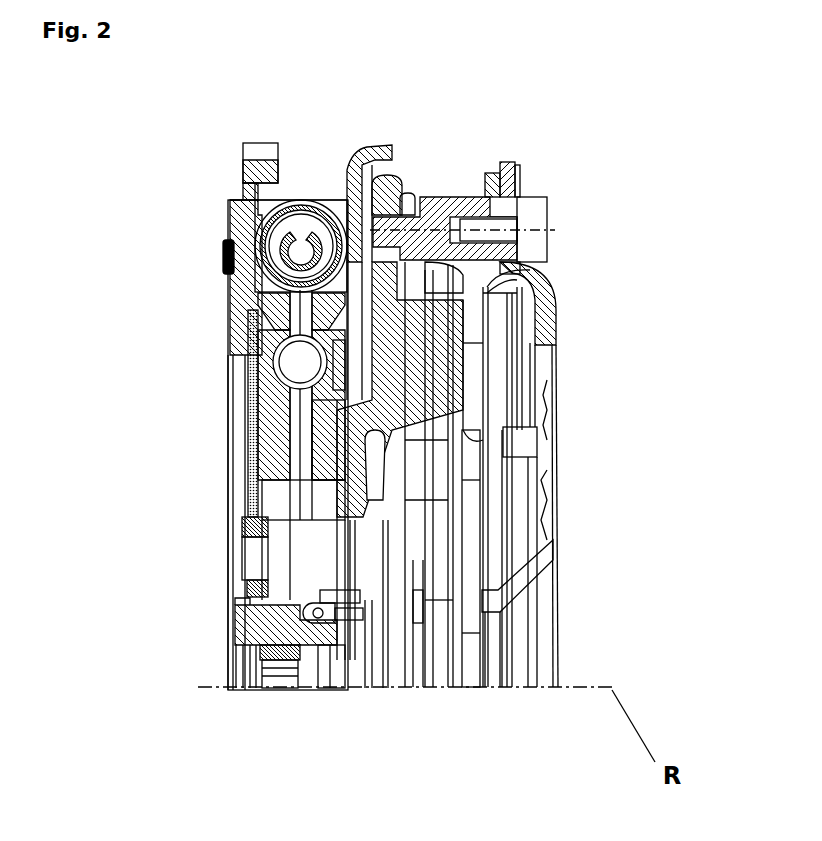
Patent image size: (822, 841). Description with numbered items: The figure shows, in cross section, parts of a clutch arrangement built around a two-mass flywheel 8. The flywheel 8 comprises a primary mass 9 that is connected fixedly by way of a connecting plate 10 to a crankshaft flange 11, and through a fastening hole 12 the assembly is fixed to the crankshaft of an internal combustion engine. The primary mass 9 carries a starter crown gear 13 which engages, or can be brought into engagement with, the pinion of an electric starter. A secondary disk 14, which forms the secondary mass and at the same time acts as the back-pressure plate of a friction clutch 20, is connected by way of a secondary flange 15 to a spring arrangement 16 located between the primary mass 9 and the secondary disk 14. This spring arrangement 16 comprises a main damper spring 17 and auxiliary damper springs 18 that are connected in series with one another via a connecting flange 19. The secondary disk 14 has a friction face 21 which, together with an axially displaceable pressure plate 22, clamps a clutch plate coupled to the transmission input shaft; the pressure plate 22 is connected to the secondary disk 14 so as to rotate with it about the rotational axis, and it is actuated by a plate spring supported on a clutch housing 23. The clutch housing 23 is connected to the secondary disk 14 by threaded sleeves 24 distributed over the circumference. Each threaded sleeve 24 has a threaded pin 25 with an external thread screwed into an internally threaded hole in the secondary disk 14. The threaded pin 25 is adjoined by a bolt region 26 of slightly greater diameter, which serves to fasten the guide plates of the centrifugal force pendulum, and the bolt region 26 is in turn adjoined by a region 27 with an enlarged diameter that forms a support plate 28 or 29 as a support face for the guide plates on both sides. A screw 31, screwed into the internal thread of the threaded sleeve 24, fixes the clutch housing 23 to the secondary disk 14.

The flywheel 8 is at (214, 341).
The primary mass 9 is at (231, 313).
The connecting plate 10 is at (252, 447).
The crankshaft flange 11 is at (240, 524).
The fastening hole 12 is at (243, 562).
The starter crown gear 13 is at (253, 173).
The secondary disk 14 is at (347, 525).
The secondary flange 15 is at (323, 425).
The spring arrangement 16 is at (302, 300).
The main damper spring 17 is at (267, 238).
The auxiliary damper springs 18 is at (340, 367).
The connecting flange 19 is at (305, 360).
The friction clutch 20 is at (584, 328).
The friction face 21 is at (398, 327).
The pressure plate 22 is at (537, 251).
The clutch housing 23 is at (548, 578).
The threaded sleeve 24 is at (452, 240).
The threaded pin 25 is at (388, 217).
The bolt region 26 is at (413, 225).
The region with an enlarged diameter 27 is at (507, 258).
The support plate 28 is at (485, 260).
The support plate 29 is at (528, 222).
The screw 31 is at (545, 246).